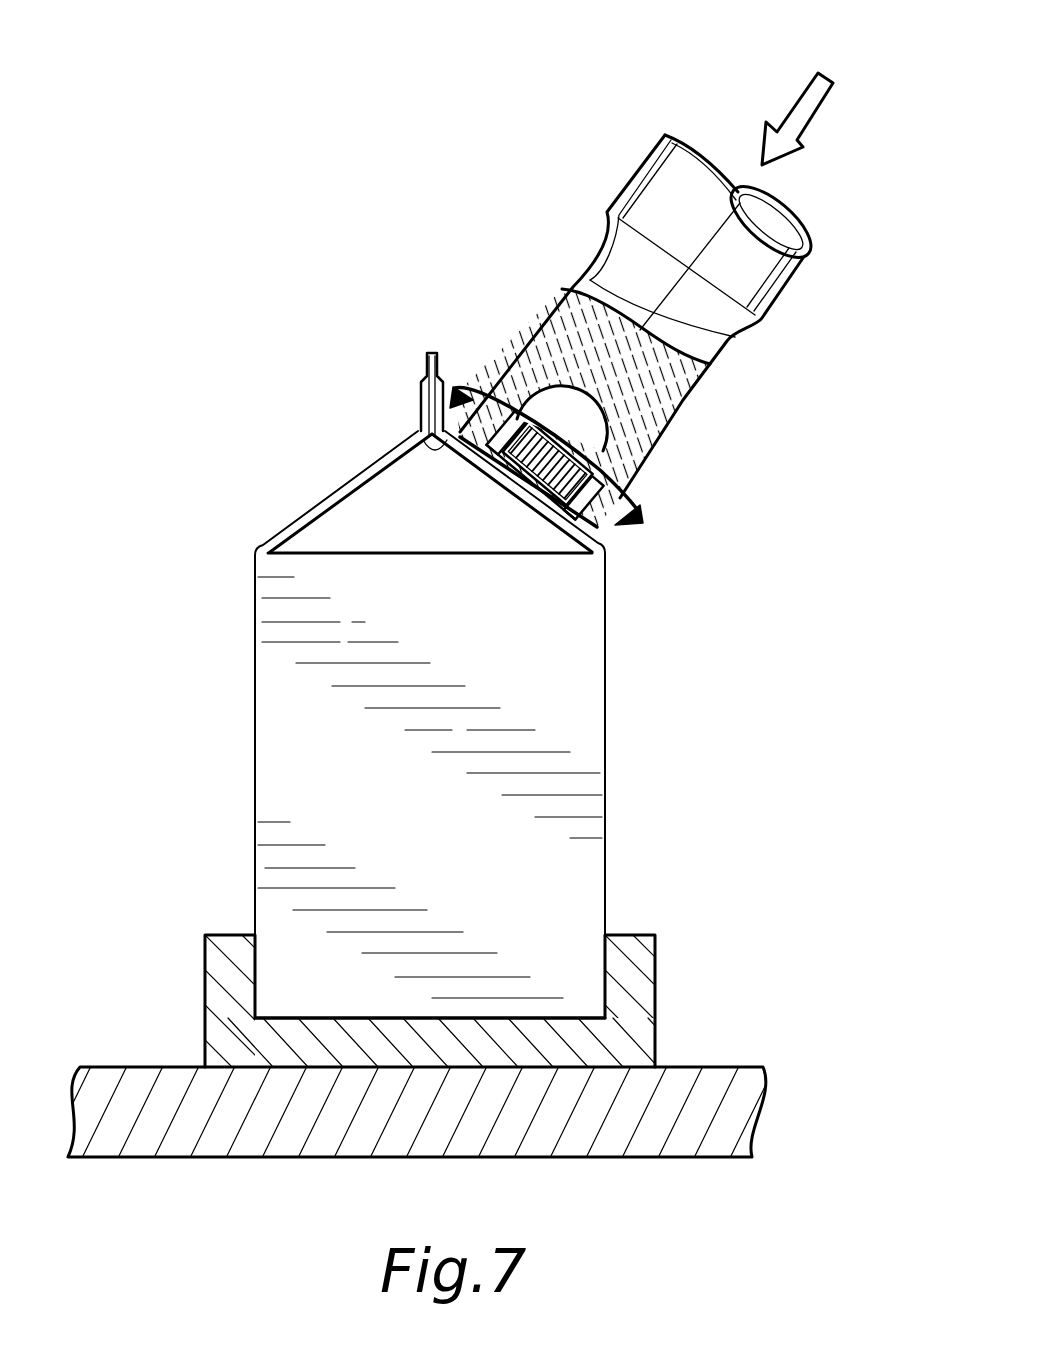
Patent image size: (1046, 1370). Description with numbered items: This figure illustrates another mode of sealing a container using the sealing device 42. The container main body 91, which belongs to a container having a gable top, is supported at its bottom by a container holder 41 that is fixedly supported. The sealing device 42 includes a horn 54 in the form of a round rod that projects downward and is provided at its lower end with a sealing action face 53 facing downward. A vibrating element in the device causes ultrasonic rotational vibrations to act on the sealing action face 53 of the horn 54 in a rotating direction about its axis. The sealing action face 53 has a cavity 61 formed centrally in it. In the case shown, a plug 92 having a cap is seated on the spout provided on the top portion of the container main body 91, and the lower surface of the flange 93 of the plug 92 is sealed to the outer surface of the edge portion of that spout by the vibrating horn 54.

The container holder 41 is at (630, 980).
The sealing device 42 is at (638, 263).
The sealing action face 53 is at (418, 431).
The horn 54 is at (562, 310).
The cavity 61 is at (598, 432).
The container main body 91 is at (582, 742).
The plug 92 is at (510, 392).
The flange 93 is at (600, 538).